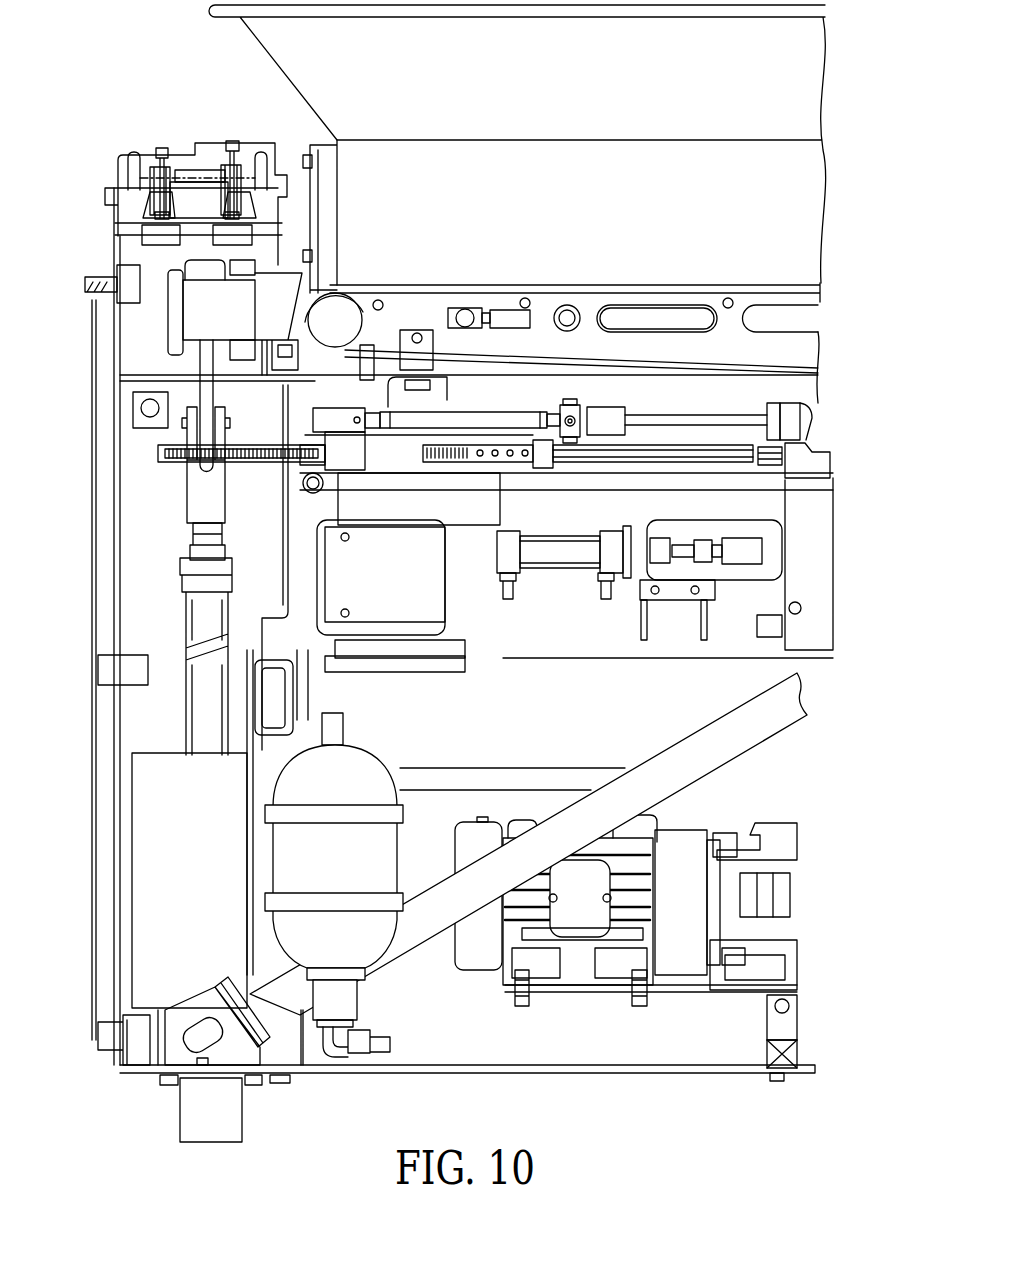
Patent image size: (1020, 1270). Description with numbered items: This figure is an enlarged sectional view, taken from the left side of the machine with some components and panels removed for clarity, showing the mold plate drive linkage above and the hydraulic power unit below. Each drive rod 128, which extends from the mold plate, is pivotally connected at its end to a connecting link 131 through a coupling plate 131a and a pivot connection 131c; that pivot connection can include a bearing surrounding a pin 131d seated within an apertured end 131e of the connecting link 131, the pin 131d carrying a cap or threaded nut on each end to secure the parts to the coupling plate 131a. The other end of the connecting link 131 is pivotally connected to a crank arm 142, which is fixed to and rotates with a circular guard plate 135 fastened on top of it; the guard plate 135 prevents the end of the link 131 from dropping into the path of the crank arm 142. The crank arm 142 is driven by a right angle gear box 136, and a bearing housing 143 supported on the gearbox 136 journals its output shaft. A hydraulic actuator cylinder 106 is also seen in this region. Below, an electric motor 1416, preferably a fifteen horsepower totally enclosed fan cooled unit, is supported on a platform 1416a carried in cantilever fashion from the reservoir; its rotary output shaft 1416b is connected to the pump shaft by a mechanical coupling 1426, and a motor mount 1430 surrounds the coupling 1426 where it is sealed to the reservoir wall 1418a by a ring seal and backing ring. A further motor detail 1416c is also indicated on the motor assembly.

The hydraulic actuator cylinder 106 is at (565, 576).
The drive rod 128 is at (700, 416).
The connecting link 131 is at (445, 415).
The coupling plate 131a is at (618, 408).
The pivot connection 131c is at (573, 404).
The pin 131d is at (572, 443).
The apertured end 131e is at (596, 425).
The circular guard plate 135 is at (360, 440).
The right angle gear box 136 is at (440, 595).
The crank arm 142 is at (330, 446).
The bearing housing 143 is at (478, 514).
The electric motor 1416 is at (484, 960).
The platform 1416a is at (535, 993).
The rotary output shaft 1416b is at (745, 935).
The compressor mount 1416c is at (728, 946).
The wall 1418a is at (790, 842).
The mechanical coupling 1426 is at (787, 897).
The motor mount 1430 is at (728, 840).